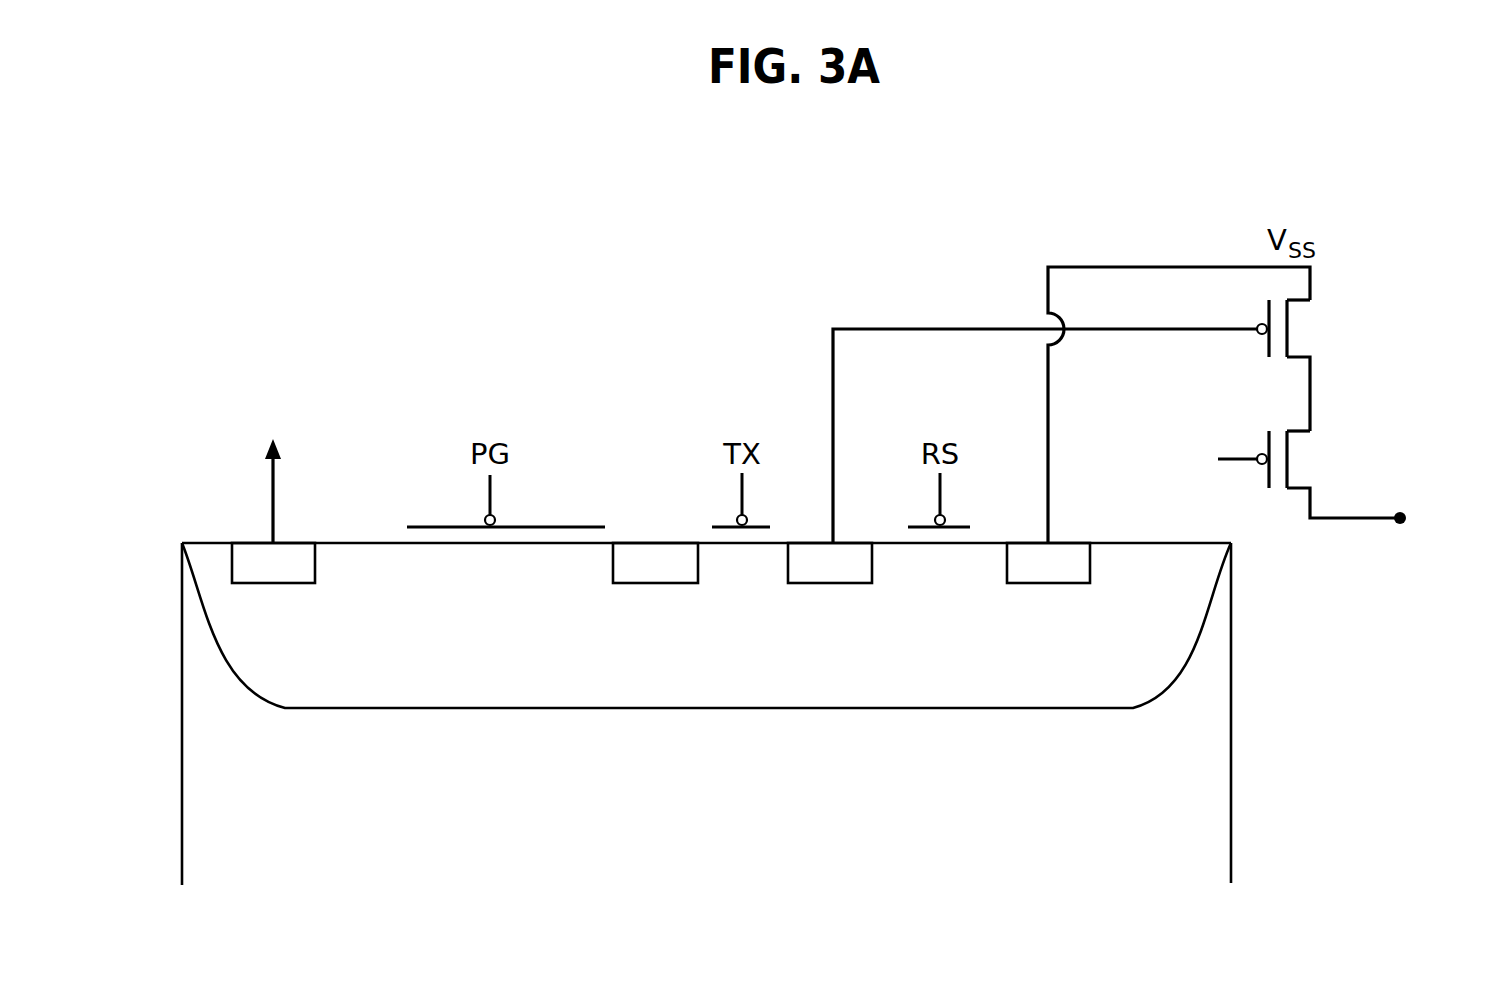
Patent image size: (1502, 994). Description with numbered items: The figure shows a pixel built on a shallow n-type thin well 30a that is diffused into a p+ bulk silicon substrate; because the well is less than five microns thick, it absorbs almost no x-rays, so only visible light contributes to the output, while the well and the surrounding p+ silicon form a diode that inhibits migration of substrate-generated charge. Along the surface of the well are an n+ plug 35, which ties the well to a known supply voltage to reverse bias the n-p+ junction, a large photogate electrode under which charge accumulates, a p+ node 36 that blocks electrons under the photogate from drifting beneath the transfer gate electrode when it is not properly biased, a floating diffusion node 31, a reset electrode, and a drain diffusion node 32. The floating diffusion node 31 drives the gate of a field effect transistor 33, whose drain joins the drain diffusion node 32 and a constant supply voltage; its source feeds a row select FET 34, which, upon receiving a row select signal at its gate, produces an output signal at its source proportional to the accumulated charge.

The thin well 30a is at (1160, 657).
The floating diffusion node 31 is at (852, 574).
The drain diffusion node 32 is at (1080, 573).
The field effect transistor 33 is at (1287, 320).
The row select FET 34 is at (1287, 455).
The n+ plug 35 is at (300, 552).
The p+ node 36 is at (628, 579).